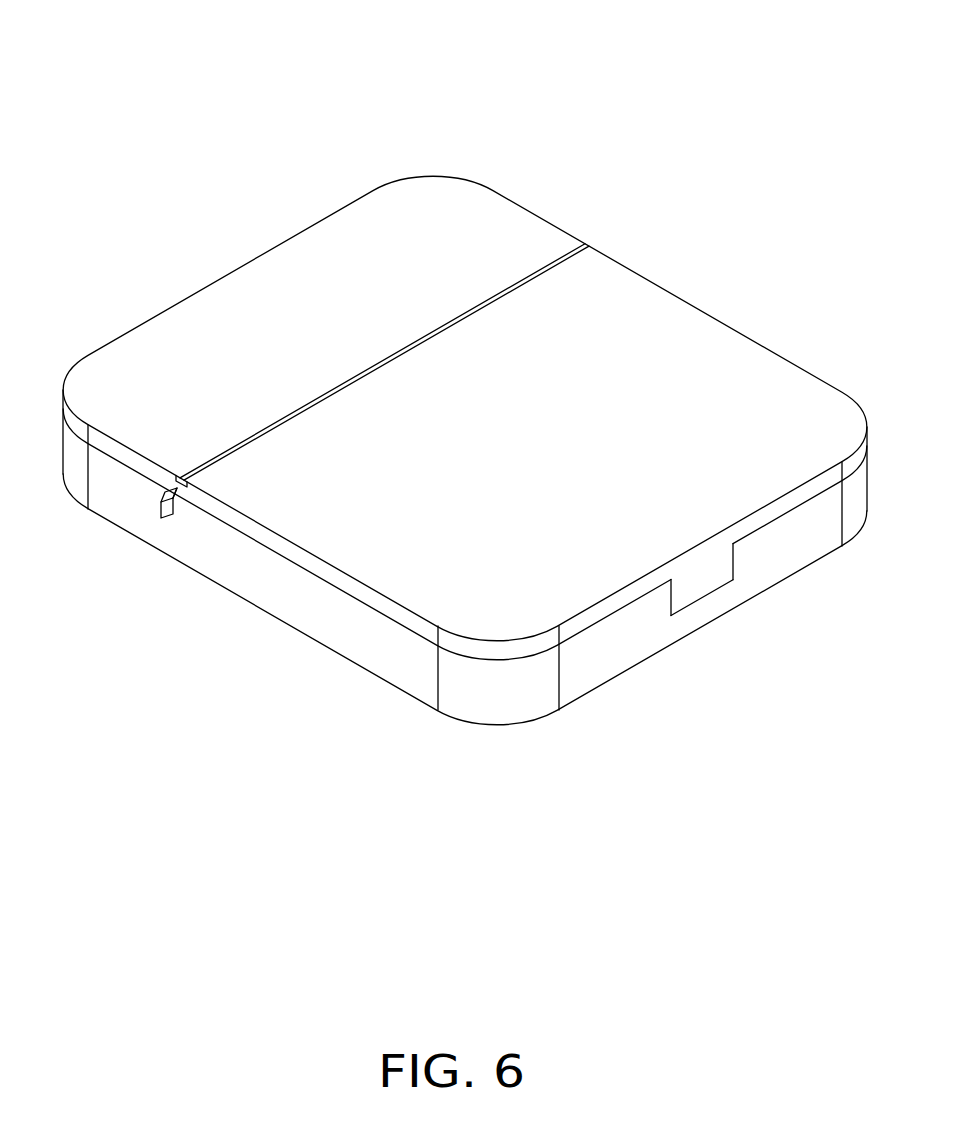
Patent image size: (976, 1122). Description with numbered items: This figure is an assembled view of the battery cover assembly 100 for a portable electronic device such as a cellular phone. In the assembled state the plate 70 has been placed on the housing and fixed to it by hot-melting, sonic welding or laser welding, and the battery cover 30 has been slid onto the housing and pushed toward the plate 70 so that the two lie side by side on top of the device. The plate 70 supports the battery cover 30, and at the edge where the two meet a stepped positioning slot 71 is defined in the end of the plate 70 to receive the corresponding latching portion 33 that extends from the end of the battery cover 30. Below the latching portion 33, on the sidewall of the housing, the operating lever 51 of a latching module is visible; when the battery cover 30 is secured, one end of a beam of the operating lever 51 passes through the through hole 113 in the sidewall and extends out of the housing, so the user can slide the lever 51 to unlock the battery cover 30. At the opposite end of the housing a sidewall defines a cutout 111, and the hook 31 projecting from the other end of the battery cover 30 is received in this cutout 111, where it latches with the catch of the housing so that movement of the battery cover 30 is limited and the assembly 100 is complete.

The battery cover assembly 100 is at (298, 85).
The plate 70 is at (488, 232).
The battery cover 30 is at (645, 322).
The stepped positioning slot 71 is at (170, 480).
The latching portion 33 is at (166, 493).
The operating lever 51 is at (168, 519).
The through hole 113 is at (187, 514).
The hook 31 is at (703, 577).
The cutout 111 is at (687, 607).